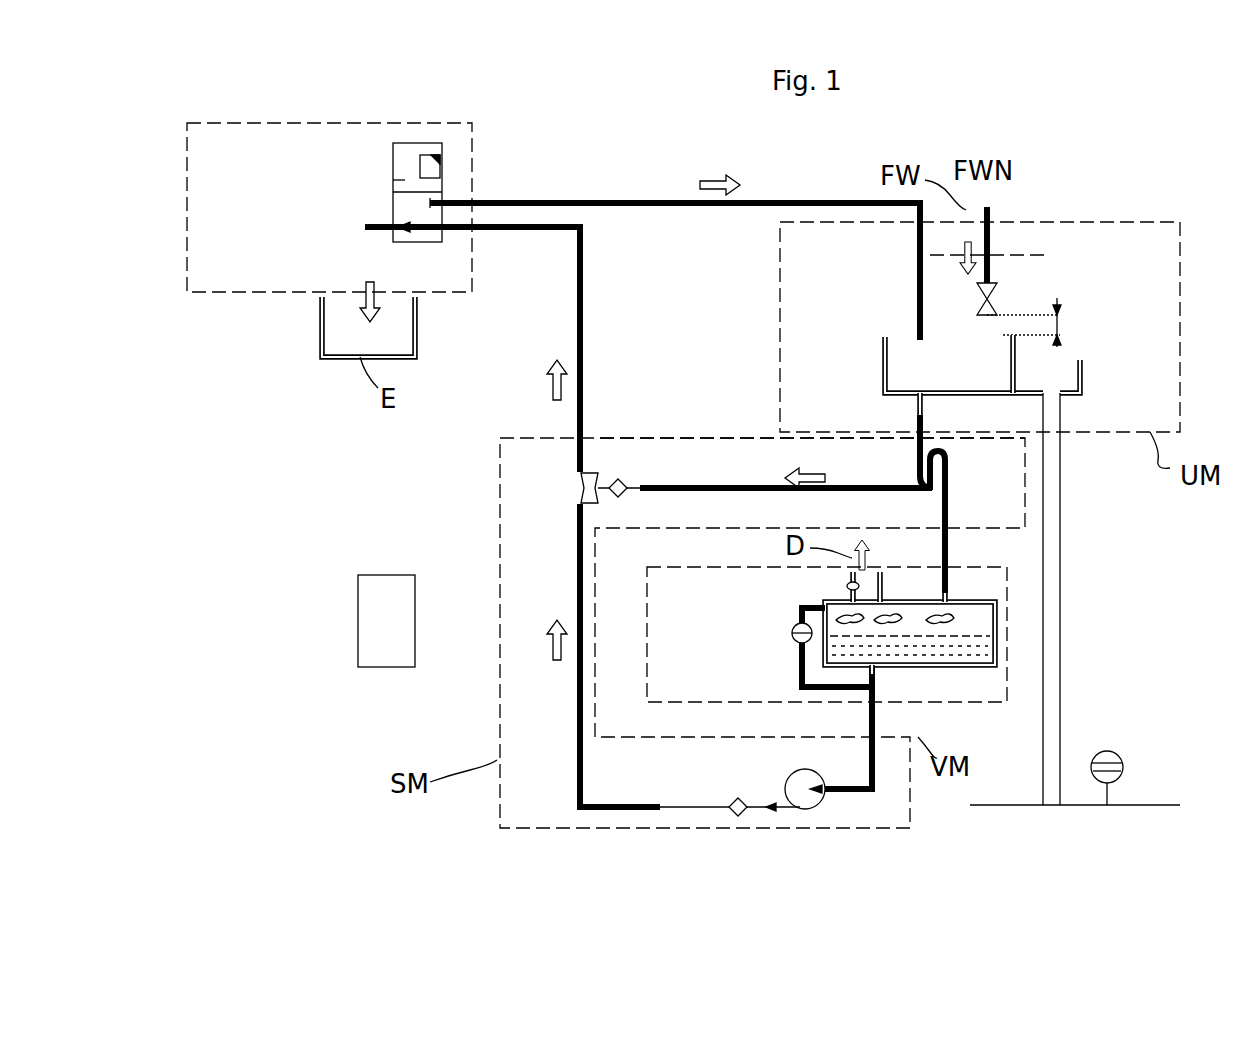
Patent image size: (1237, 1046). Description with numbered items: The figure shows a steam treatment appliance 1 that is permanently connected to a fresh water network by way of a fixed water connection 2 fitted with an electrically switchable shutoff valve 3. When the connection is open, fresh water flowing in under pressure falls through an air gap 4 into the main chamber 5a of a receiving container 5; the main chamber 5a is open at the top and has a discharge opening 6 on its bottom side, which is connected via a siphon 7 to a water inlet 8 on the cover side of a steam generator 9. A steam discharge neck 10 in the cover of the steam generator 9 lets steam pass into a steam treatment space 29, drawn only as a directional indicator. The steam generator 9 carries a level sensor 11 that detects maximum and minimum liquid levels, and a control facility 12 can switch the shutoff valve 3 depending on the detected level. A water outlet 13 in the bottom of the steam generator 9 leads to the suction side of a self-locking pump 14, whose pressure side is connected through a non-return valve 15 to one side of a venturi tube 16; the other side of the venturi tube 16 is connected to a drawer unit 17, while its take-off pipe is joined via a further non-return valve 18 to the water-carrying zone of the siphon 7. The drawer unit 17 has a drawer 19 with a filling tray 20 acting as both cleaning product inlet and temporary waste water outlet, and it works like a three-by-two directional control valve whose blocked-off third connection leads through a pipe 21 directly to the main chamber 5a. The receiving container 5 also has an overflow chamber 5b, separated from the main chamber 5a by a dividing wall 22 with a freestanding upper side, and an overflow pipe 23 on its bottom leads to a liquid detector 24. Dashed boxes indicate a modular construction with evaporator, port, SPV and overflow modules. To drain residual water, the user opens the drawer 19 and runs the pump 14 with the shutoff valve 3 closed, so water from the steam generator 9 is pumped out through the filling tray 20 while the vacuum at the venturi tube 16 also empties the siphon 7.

The steam treatment appliance 1 is at (327, 493).
The fixed water connection 2 is at (995, 203).
The shutoff valve 3 is at (990, 302).
The air gap 4 is at (1060, 323).
The receiving container 5 is at (984, 352).
The main chamber 5a is at (905, 340).
The overflow chamber 5b is at (1060, 372).
The discharge opening 6 is at (915, 405).
The siphon 7 is at (950, 456).
The water inlet 8 is at (950, 600).
The steam generator 9 is at (985, 692).
The steam discharge neck 10 is at (850, 578).
The level sensor 11 is at (790, 634).
The control facility 12 is at (358, 610).
The water outlet 13 is at (877, 670).
The self-locking pump 14 is at (784, 782).
The non-return valve 15 is at (745, 812).
The venturi tube 16 is at (580, 488).
The drawer unit 17 is at (240, 292).
The further non-return valve 18 is at (625, 478).
The drawer 19 is at (457, 146).
The filling tray 20 is at (420, 143).
The pipe 21 is at (677, 207).
The dividing wall 22 is at (1008, 355).
The overflow pipe 23 is at (1065, 647).
The liquid detector 24 is at (1123, 765).
The steam treatment space 29 is at (812, 483).